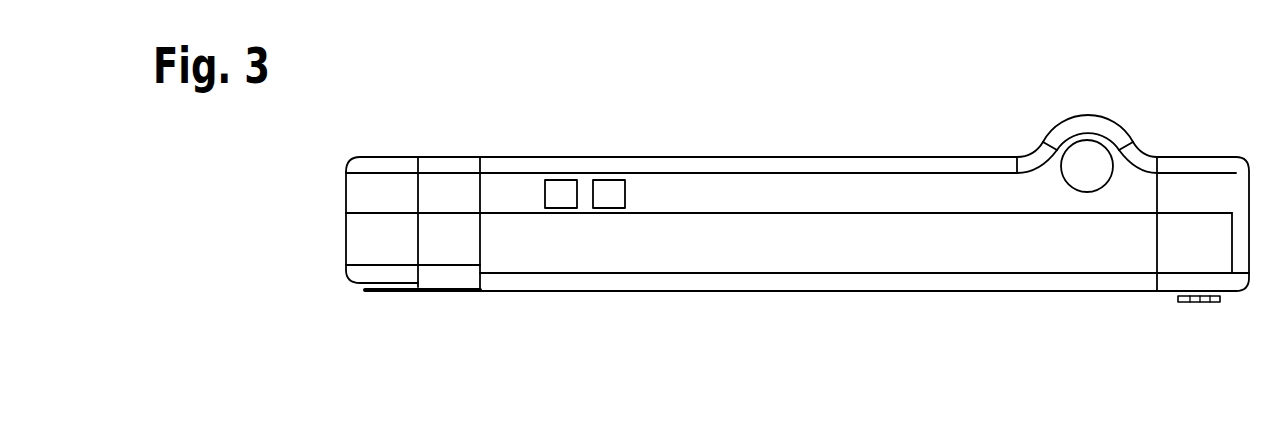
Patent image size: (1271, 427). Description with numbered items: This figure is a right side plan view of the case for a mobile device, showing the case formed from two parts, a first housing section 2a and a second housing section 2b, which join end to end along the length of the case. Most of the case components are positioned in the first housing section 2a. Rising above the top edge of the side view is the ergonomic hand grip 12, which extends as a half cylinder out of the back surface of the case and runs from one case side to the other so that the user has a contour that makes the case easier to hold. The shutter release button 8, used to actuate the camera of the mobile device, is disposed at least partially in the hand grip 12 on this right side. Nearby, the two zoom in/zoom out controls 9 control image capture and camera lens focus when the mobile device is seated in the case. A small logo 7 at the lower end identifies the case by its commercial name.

The first housing section 2a is at (785, 293).
The second housing section 2b is at (482, 143).
The logo 7 is at (1220, 308).
The shutter release button 8 is at (1093, 158).
The zoom in/zoom out controls 9 is at (562, 180).
The hand grip 12 is at (1047, 131).